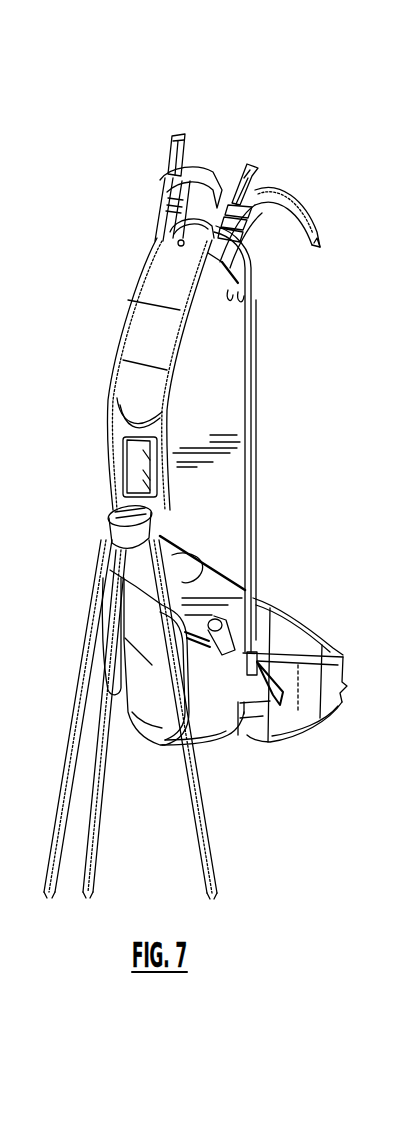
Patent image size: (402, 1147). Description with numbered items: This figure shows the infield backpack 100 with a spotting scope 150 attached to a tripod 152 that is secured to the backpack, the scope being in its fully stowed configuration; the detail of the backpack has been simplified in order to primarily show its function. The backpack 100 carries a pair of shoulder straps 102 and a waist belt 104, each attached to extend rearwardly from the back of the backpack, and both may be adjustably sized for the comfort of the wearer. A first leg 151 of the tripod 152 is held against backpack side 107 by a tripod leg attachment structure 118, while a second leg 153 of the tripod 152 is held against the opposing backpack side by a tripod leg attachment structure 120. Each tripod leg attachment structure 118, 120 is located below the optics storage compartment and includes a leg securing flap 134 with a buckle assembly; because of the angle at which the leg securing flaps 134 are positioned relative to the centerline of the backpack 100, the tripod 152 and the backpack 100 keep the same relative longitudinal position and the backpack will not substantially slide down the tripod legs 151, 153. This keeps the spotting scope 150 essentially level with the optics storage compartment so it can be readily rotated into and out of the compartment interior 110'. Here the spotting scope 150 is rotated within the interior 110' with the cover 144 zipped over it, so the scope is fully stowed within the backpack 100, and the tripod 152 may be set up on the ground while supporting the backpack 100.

The infield backpack 100 is at (102, 131).
The shoulder straps 102 is at (160, 200).
The waist belt 104 is at (305, 647).
The backpack side 107 is at (229, 507).
The optics storage compartment interior 110' is at (105, 485).
The tripod leg attachment structure 118 is at (197, 693).
The tripod leg attachment structure 120 is at (108, 684).
The leg securing flap 134 is at (200, 648).
The cover 144 is at (168, 347).
The spotting scope 150 is at (158, 447).
The first leg 151 is at (210, 845).
The tripod 152 is at (83, 628).
The second leg 153 is at (98, 823).